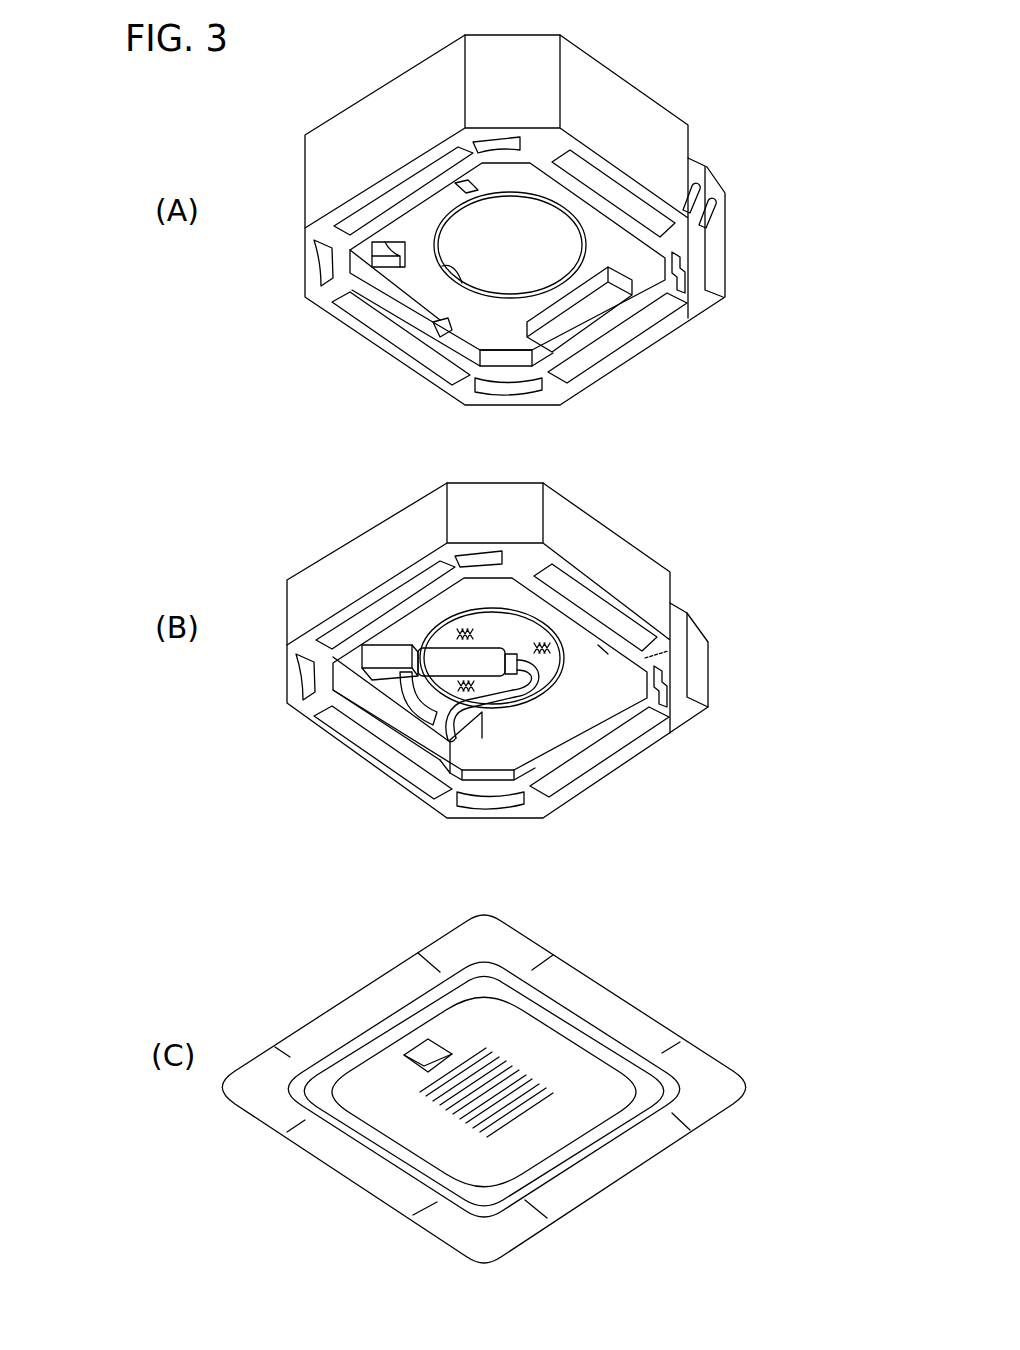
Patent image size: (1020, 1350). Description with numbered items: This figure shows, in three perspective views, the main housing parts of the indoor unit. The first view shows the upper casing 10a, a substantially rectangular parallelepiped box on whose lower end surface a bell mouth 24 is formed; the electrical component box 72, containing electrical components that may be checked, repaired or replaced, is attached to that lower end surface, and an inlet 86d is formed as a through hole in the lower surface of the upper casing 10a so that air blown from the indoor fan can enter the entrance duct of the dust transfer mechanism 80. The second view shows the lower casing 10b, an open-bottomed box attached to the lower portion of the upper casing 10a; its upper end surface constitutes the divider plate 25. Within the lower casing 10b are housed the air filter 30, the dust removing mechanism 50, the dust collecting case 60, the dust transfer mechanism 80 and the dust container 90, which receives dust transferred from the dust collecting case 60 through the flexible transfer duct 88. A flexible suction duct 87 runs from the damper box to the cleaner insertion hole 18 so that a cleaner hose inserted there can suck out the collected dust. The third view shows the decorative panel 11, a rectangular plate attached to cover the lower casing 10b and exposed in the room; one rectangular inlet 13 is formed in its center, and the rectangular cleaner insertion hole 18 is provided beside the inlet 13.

The upper casing 10a is at (630, 85).
The inlet 86d is at (372, 256).
The electrical component box 72 is at (527, 325).
The bell mouth 24 is at (447, 268).
The lower casing 10b is at (620, 537).
The dust removing mechanism 50 is at (481, 640).
The dust collecting case 60 is at (443, 640).
The divider plate 25 is at (605, 652).
The dust transfer mechanism 80 is at (352, 657).
The suction duct 87 is at (380, 692).
The transfer duct 88 is at (450, 760).
The air filter 30 is at (550, 660).
The dust container 90 is at (447, 768).
The decorative panel 11 is at (530, 930).
The cleaner insertion hole 18 is at (412, 1048).
The inlet 13 is at (497, 1048).